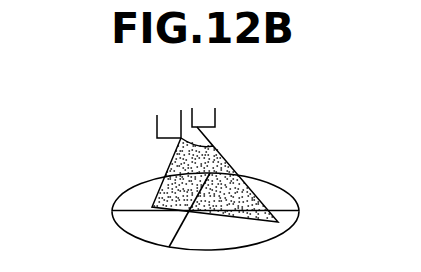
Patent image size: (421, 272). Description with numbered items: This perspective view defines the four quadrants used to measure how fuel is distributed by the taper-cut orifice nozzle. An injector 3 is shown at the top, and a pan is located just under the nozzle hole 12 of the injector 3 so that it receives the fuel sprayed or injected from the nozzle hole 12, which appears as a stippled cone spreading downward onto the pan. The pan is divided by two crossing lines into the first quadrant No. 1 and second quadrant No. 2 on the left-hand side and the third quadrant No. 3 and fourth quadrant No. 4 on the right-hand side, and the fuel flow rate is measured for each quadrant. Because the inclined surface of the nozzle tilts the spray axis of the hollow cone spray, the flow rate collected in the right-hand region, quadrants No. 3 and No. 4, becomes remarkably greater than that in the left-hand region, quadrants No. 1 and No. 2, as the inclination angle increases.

The injector 3 is at (153, 113).
The nozzle hole 12 is at (213, 146).
The first quadrant No. 1 is at (147, 176).
The second quadrant No. 2 is at (106, 235).
The third quadrant No. 3 is at (243, 235).
The fourth quadrant No. 4 is at (296, 187).